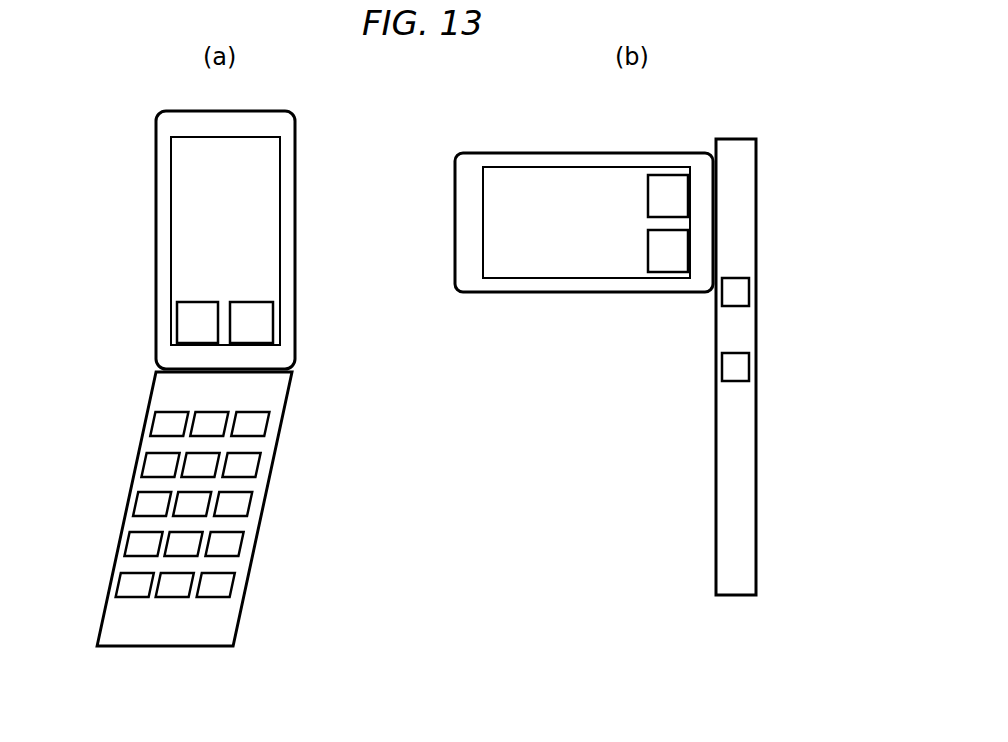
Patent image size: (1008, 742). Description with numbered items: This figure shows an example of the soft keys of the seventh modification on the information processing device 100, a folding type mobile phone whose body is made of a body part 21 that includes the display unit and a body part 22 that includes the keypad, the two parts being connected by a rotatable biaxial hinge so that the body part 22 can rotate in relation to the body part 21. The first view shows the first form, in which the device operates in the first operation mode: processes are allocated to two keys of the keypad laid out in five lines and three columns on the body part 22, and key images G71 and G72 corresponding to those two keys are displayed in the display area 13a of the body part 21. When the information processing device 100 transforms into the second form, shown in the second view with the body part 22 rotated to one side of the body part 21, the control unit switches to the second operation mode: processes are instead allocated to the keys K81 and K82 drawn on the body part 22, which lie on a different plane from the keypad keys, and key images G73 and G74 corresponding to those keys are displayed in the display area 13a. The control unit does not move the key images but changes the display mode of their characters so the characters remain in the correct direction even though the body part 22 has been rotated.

The information processing device 100 is at (330, 167).
The body part 21 is at (289, 198).
The display area 13a is at (272, 247).
The key image G71 is at (180, 325).
The key image G72 is at (267, 323).
The key image G73 is at (666, 180).
The key image G74 is at (664, 265).
The body part 22 is at (268, 443).
The hardware key K81 is at (744, 296).
The hardware key K82 is at (744, 371).